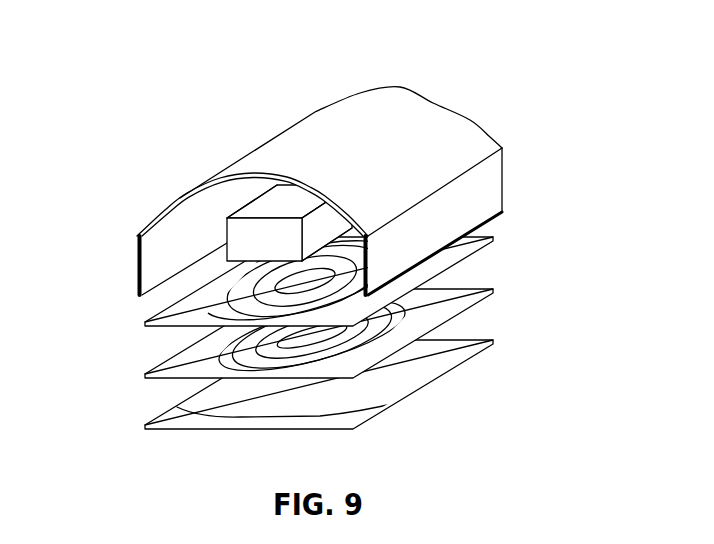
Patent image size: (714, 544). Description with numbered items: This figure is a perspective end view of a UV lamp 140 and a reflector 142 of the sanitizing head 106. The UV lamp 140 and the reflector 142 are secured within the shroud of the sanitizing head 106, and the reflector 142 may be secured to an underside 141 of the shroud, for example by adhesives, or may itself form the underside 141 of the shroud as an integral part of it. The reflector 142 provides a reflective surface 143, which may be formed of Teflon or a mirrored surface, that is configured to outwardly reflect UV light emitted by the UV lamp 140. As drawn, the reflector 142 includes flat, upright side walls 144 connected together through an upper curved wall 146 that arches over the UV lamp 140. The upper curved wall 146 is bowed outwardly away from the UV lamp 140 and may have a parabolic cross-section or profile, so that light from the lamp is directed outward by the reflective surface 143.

The sanitizing head 106 is at (323, 230).
The UV lamp 140 is at (252, 245).
The underside 141 is at (402, 107).
The reflector 142 is at (322, 163).
The reflective surface 143 is at (152, 266).
The side walls 144 is at (137, 252).
The upper curved wall 146 is at (302, 157).